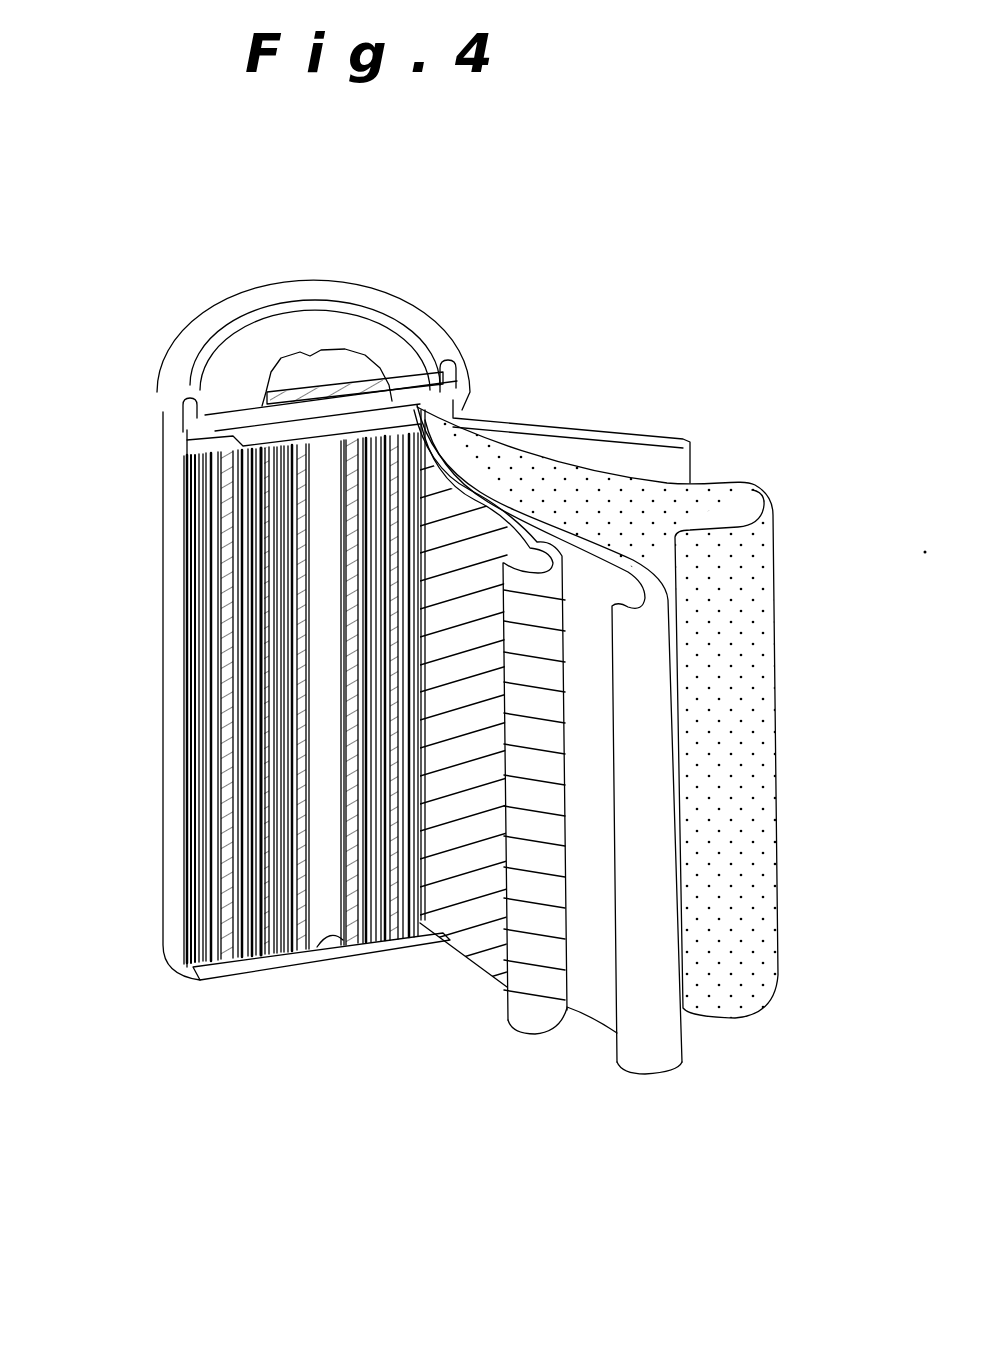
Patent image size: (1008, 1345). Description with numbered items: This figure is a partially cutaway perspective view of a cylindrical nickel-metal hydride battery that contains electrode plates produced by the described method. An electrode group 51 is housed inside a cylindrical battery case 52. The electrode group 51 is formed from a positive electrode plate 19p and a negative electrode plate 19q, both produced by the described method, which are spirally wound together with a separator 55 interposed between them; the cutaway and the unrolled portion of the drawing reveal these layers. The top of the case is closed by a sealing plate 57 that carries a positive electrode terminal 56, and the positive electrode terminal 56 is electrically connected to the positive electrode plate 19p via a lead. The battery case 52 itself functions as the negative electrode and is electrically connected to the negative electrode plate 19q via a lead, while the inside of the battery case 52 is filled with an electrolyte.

The electrode group 51 is at (187, 686).
The battery case 52 is at (163, 840).
The separator 55 is at (683, 1033).
The positive electrode terminal 56 is at (338, 352).
The sealing plate 57 is at (237, 363).
The positive electrode plate 19p is at (775, 596).
The negative electrode plate 19q is at (532, 1037).